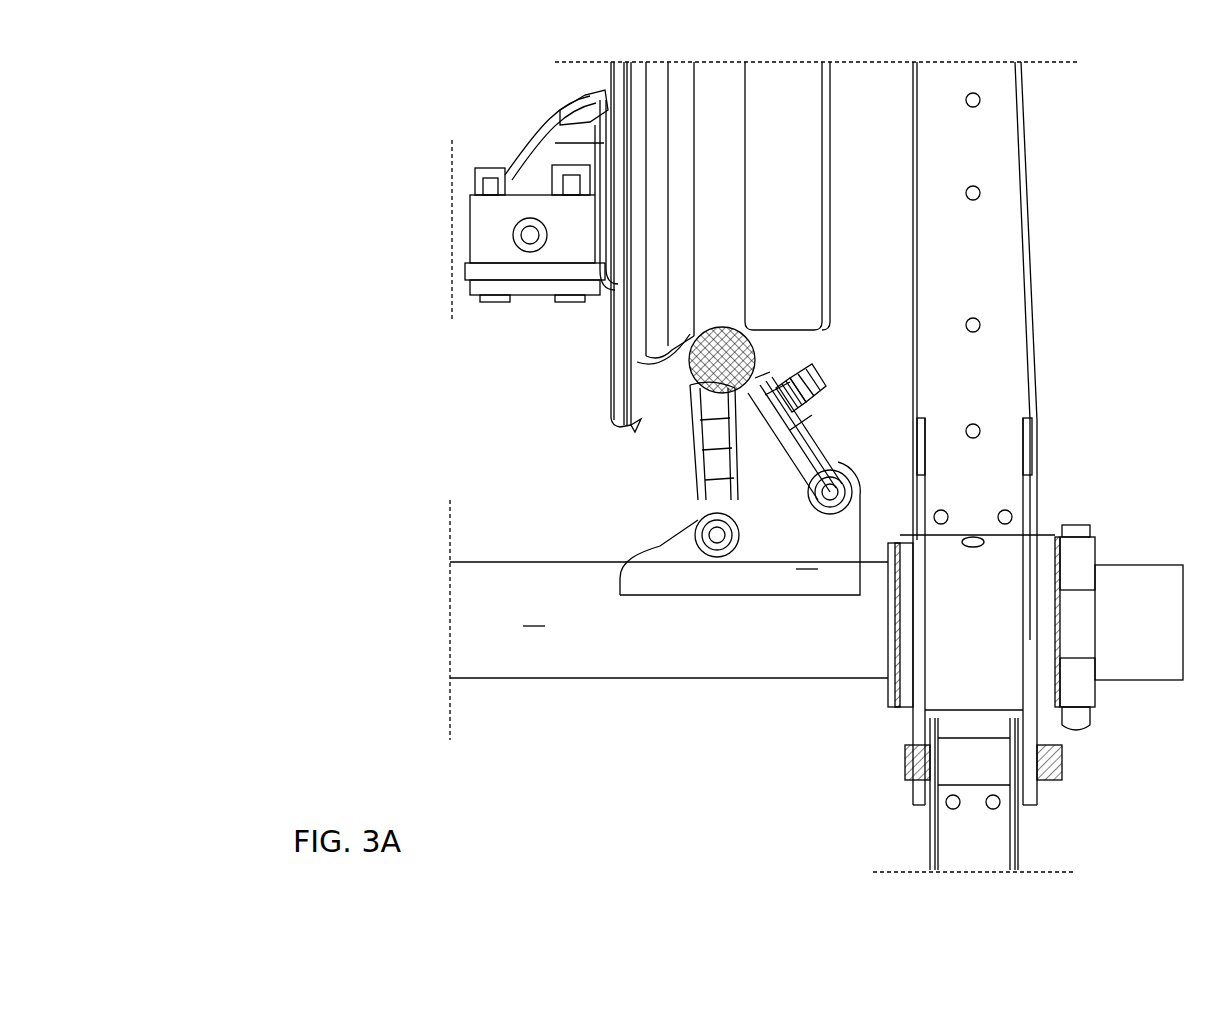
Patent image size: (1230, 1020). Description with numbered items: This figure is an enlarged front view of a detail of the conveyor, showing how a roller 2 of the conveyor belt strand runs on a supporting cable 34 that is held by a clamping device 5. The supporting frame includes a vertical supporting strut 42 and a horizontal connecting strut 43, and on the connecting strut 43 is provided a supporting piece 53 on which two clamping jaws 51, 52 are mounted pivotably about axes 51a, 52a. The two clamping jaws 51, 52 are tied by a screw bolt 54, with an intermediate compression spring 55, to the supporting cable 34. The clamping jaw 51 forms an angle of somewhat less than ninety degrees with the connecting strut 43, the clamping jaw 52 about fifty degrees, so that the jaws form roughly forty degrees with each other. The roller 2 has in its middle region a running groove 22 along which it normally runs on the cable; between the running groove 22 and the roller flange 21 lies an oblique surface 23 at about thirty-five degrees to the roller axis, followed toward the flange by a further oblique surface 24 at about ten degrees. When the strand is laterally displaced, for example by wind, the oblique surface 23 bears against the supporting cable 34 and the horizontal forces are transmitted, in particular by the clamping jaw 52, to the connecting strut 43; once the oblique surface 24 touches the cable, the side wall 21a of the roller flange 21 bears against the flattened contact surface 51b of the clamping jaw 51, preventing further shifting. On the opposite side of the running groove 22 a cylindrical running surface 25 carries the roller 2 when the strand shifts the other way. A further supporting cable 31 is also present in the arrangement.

The roller 2 is at (820, 125).
The clamping device 5 is at (769, 440).
The roller flange 21 is at (626, 336).
The side wall 21a is at (635, 428).
The running groove 22 is at (718, 76).
The oblique surface 23 is at (683, 76).
The further oblique surface 24 is at (657, 76).
The cylindrical running surface 25 is at (770, 76).
The supporting cable 31 is at (484, 233).
The supporting cable 34 is at (686, 372).
The vertical supporting strut 42 is at (1012, 287).
The horizontal connecting strut 43 is at (669, 620).
The clamping jaw 51 is at (700, 487).
The axis 51a is at (716, 536).
The contact surface 51b is at (692, 376).
The clamping jaw 52 is at (739, 484).
The axis 52a is at (836, 491).
The supporting piece 53 is at (740, 528).
The screw bolt 54 is at (812, 380).
The compression spring 55 is at (790, 382).